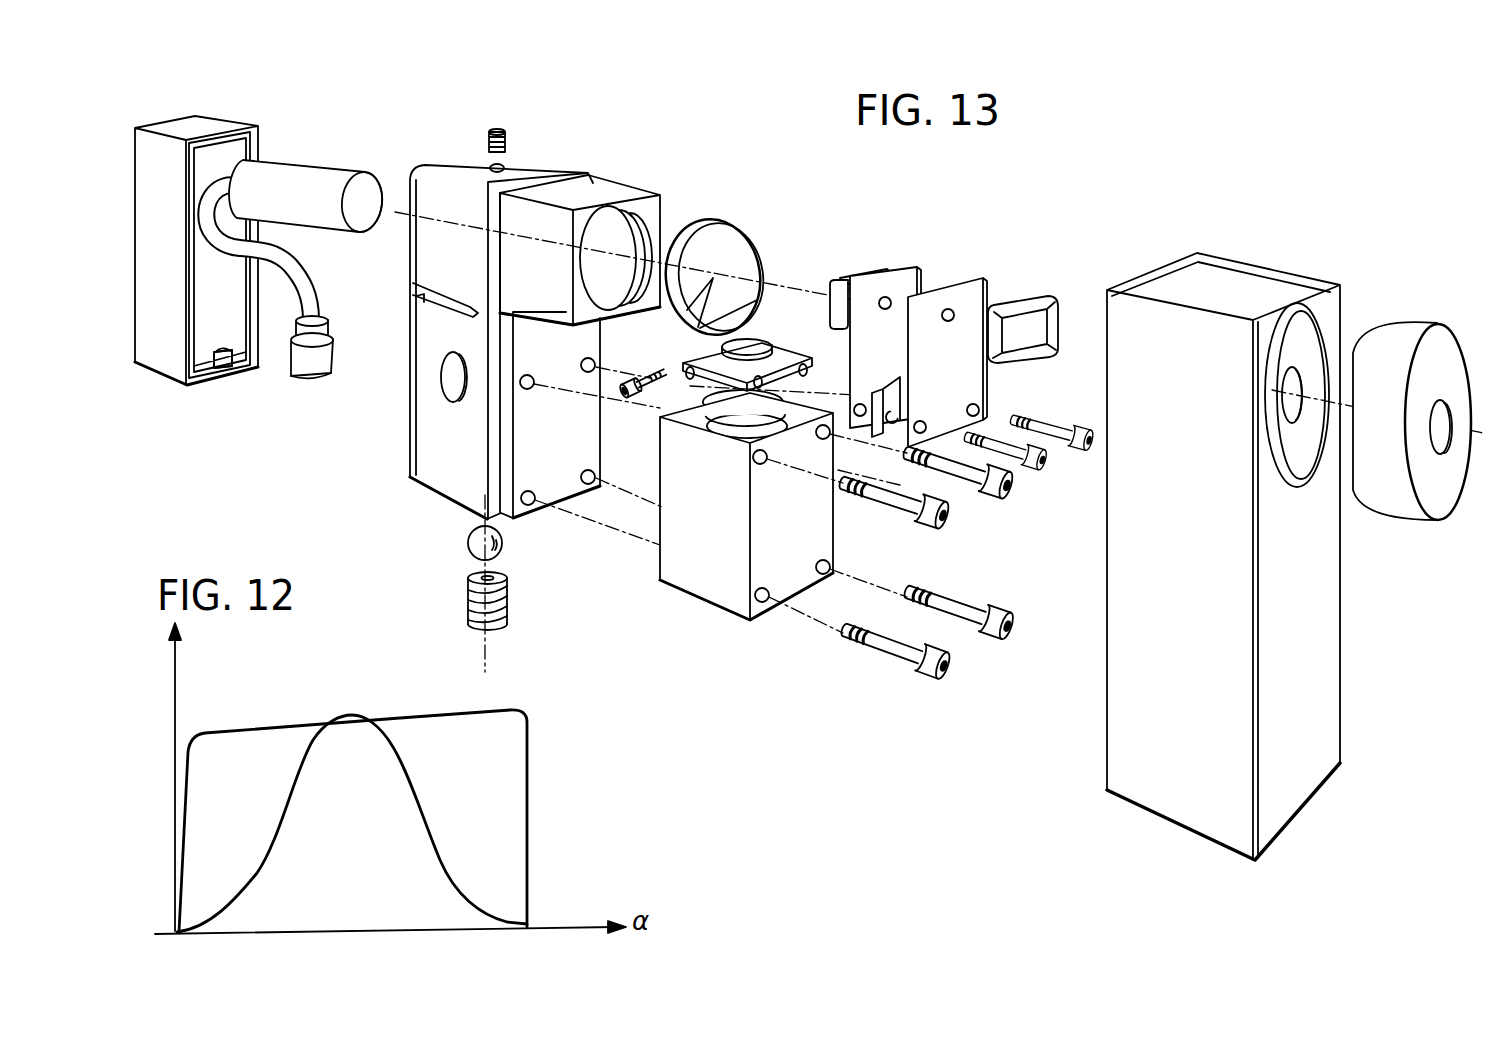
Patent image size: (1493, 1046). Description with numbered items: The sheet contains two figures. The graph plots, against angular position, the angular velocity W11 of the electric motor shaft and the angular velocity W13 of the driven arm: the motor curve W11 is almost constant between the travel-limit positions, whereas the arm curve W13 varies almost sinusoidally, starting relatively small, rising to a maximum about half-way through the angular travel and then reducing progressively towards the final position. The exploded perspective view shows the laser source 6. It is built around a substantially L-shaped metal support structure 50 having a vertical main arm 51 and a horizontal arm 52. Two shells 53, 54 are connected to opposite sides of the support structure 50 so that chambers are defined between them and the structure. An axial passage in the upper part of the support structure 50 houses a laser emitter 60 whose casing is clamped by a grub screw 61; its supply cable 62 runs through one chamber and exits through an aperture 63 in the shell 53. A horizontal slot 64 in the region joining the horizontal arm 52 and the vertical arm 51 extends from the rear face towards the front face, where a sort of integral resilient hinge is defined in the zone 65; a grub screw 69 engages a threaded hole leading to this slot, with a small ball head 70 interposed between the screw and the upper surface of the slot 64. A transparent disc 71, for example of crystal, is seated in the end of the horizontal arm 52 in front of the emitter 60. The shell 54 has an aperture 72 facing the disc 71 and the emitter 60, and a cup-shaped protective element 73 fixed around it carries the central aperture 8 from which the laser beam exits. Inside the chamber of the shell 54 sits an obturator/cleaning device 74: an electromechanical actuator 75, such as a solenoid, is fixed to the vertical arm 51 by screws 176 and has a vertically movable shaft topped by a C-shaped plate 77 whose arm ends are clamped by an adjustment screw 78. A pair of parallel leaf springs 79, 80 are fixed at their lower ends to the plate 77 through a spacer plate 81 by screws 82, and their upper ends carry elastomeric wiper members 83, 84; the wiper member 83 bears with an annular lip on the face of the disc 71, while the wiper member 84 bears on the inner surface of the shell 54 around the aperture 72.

In FIG. 13, the laser source 6 is at (1180, 215).
In FIG. 13, the central aperture 8 is at (1437, 455).
In FIG. 13, the support structure 50 is at (588, 163).
In FIG. 13, the vertical main arm 51 is at (420, 413).
In FIG. 13, the horizontal arm 52 is at (622, 190).
In FIG. 13, the shell 53 is at (156, 338).
In FIG. 13, the shell 54 is at (1330, 617).
In FIG. 13, the laser emitter 60 is at (357, 183).
In FIG. 13, the grub screw 61 is at (488, 140).
In FIG. 13, the supply cable 62 is at (300, 270).
In FIG. 13, the aperture 63 is at (221, 366).
In FIG. 13, the horizontal slot 64 is at (433, 302).
In FIG. 13, the integral resilient hinge zone 65 is at (478, 312).
In FIG. 13, the grub screw 69 is at (516, 590).
In FIG. 13, the ball head 70 is at (470, 538).
In FIG. 13, the transparent disc 71 is at (731, 248).
In FIG. 13, the aperture 72 is at (1297, 365).
In FIG. 13, the protective element 73 is at (1398, 333).
In FIG. 13, the obturator/cleaning device 74 is at (992, 252).
In FIG. 13, the electromechanical actuator 75 is at (705, 577).
In FIG. 13, the plate 77 is at (777, 360).
In FIG. 13, the adjustment screw 78 is at (633, 380).
In FIG. 13, the leaf spring 79 is at (895, 288).
In FIG. 13, the leaf spring 80 is at (950, 297).
In FIG. 13, the spacer plate 81 is at (884, 388).
In FIG. 13, the screws 82 is at (990, 443).
In FIG. 13, the wiper member 83 is at (847, 278).
In FIG. 13, the wiper member 84 is at (1017, 300).
In FIG. 13, the screws 176 is at (912, 510).
In FIG. 12, the angular velocity of the motor shaft W11 is at (253, 723).
In FIG. 12, the angular velocity of the arm W13 is at (417, 800).